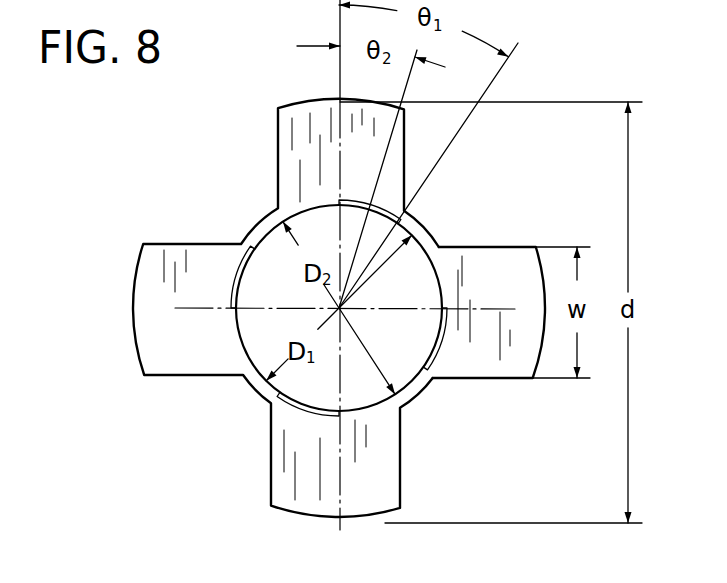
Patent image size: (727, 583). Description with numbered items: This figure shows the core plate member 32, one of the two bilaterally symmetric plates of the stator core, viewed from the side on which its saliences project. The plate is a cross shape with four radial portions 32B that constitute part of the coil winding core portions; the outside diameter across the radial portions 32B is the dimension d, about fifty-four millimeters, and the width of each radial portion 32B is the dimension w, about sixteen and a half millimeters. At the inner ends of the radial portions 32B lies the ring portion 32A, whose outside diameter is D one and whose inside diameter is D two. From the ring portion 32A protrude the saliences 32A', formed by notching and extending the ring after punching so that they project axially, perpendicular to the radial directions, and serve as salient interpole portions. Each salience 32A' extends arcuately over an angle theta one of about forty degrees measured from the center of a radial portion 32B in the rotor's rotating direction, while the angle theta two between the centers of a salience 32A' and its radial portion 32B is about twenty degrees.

The core plate member 32 is at (268, 90).
The ring portion 32A is at (292, 239).
The salience 32A' is at (311, 396).
The radial portion 32B is at (489, 372).